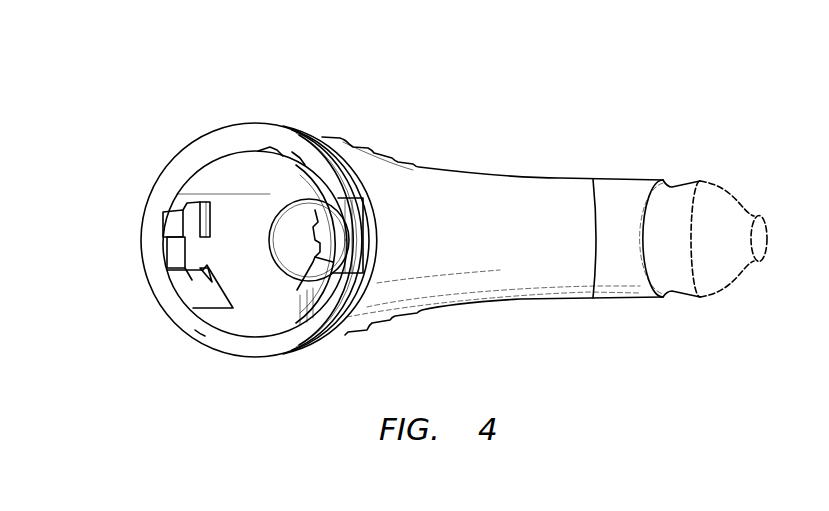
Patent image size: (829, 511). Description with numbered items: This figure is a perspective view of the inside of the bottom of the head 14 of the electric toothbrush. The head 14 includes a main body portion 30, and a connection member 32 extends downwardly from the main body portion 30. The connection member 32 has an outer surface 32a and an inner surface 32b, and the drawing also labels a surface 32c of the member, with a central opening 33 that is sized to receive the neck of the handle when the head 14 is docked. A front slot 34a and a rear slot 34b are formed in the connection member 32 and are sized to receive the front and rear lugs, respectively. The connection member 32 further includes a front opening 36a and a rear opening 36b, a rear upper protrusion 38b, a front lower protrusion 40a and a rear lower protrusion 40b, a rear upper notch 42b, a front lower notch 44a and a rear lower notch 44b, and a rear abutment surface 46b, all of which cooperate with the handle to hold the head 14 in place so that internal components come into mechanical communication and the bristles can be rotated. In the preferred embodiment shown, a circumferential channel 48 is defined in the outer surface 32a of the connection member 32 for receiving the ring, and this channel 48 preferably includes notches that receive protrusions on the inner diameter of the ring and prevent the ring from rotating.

The head 14 is at (664, 96).
The main body portion 30 is at (538, 188).
The connection member 32 is at (252, 352).
The outer surface 32a is at (322, 278).
The inner surface 32b is at (253, 313).
The collar front face 32c is at (197, 335).
The central opening 33 is at (242, 170).
The front slot 34a is at (297, 150).
The rear slot 34b is at (172, 300).
The front opening 36a is at (318, 231).
The rear opening 36b is at (193, 203).
The rear upper protrusion 38b is at (208, 252).
The front lower protrusion 40a is at (323, 226).
The rear lower protrusion 40b is at (176, 253).
The rear upper notch 42b is at (208, 215).
The front lower notch 44a is at (322, 253).
The rear lower notch 44b is at (170, 228).
The rear abutment surface 46b is at (183, 300).
The circumferential channel 48 is at (328, 330).